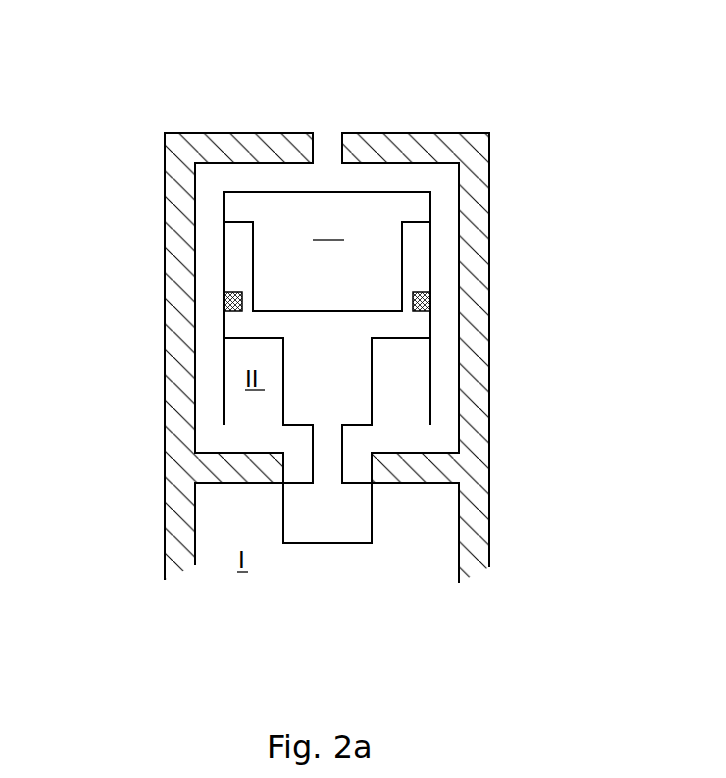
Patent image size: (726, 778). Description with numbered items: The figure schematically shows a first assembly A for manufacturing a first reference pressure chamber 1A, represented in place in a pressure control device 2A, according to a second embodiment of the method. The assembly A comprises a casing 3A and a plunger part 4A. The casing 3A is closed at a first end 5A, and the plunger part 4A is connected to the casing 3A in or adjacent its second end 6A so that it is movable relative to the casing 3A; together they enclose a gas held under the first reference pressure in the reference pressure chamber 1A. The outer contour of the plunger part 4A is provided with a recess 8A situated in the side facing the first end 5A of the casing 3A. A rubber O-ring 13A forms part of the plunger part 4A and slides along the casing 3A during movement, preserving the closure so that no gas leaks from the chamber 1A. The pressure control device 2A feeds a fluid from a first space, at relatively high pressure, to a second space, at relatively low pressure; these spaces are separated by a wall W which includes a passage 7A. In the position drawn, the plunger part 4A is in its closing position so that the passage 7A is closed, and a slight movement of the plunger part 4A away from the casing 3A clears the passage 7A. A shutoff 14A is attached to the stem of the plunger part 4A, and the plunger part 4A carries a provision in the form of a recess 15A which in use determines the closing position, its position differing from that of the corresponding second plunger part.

The first reference pressure chamber 1A is at (282, 212).
The pressure control device 2A is at (508, 297).
The casing 3A is at (419, 192).
The plunger part 4A is at (409, 324).
The first end 5A is at (369, 192).
The second end 6A is at (407, 399).
The passage 7A is at (300, 472).
The recess 8A is at (281, 268).
The O-ring 13A is at (224, 301).
The shutoff 14A is at (328, 498).
The recess 15A is at (358, 443).
The first assembly A is at (415, 258).
The wall W is at (437, 469).